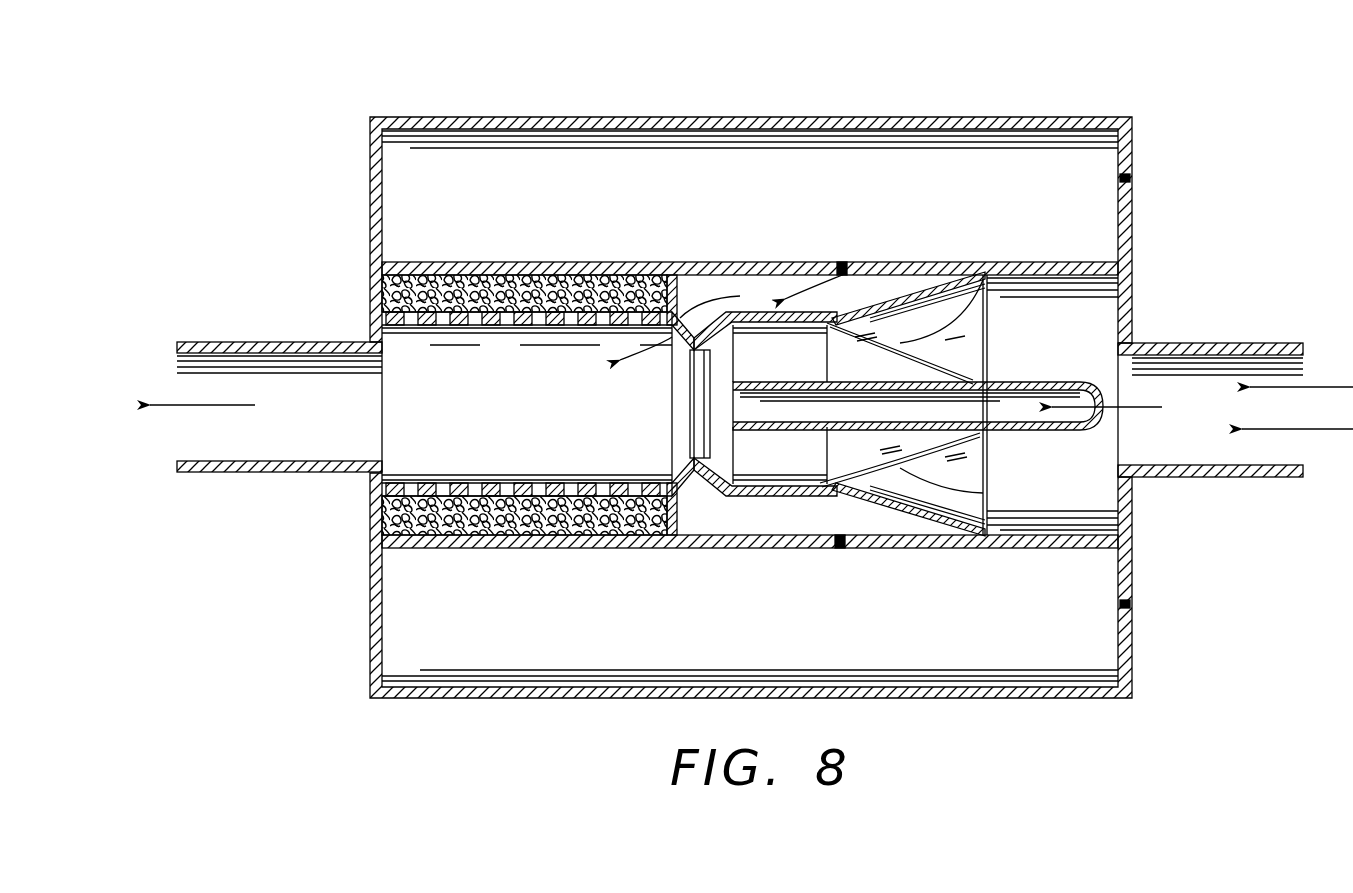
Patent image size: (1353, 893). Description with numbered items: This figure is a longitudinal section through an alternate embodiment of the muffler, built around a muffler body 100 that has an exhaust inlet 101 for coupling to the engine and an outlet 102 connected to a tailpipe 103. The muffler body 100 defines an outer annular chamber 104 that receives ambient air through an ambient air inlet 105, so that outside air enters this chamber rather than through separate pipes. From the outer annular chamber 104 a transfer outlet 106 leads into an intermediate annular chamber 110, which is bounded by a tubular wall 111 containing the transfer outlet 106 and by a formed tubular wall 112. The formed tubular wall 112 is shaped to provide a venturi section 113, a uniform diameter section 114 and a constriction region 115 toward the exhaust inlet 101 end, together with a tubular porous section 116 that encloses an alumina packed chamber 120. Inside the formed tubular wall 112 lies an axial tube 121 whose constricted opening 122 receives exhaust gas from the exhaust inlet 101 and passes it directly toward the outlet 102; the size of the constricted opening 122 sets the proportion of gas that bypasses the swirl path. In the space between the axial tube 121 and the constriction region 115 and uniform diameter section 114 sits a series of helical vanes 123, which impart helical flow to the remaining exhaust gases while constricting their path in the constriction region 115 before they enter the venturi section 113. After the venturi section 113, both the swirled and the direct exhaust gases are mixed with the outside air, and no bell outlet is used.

The muffler body 100 is at (1070, 76).
The exhaust inlet 101 is at (1243, 368).
The outlet 102 is at (380, 413).
The tailpipe 103 is at (175, 360).
The outer annular chamber 104 is at (755, 165).
The ambient air inlet 105 is at (1035, 192).
The transfer outlet 106 is at (893, 222).
The intermediate annular chamber 110 is at (783, 285).
The tubular wall 111 is at (702, 263).
The formed tubular wall 112 is at (767, 324).
The venturi section 113 is at (703, 342).
The uniform diameter section 114 is at (768, 480).
The constriction region 115 is at (947, 280).
The tubular porous section 116 is at (538, 325).
The alumina packed chamber 120 is at (597, 277).
The axial tube 121 is at (1085, 385).
The constricted opening 122 is at (1110, 400).
The helical vanes 123 is at (953, 480).